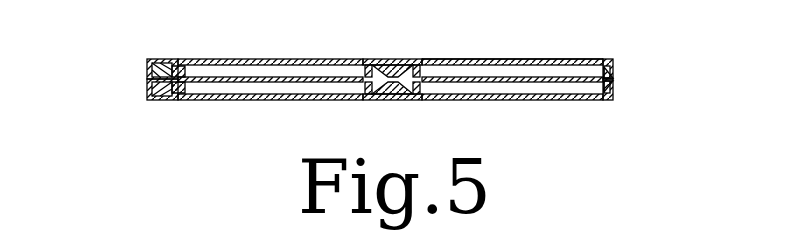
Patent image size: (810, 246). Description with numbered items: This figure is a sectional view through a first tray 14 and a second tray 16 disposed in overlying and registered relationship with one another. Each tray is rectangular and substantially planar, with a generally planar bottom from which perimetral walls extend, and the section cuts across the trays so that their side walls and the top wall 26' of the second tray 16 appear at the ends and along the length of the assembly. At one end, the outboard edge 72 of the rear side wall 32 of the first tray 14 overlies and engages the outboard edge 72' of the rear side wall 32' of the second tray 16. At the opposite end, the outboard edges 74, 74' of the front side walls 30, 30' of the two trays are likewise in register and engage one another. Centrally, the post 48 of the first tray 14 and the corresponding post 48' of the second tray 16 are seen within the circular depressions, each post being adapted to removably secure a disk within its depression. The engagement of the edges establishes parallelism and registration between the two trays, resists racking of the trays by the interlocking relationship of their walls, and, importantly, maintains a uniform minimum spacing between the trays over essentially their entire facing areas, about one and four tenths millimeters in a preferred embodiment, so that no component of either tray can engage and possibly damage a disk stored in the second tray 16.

The first tray 14 is at (540, 100).
The second tray 16 is at (513, 58).
The top wall 26' is at (512, 29).
The first (front) side wall 30 is at (142, 116).
The first (front) side wall 30' is at (147, 44).
The outboard edge 74 is at (199, 114).
The outboard edge 74' is at (205, 46).
The post 48 is at (391, 117).
The post 48' is at (391, 45).
The second (rear) side wall 32 is at (621, 125).
The second (rear) side wall 32' is at (628, 42).
The outboard edge 72 is at (639, 107).
The outboard edge 72' is at (647, 60).